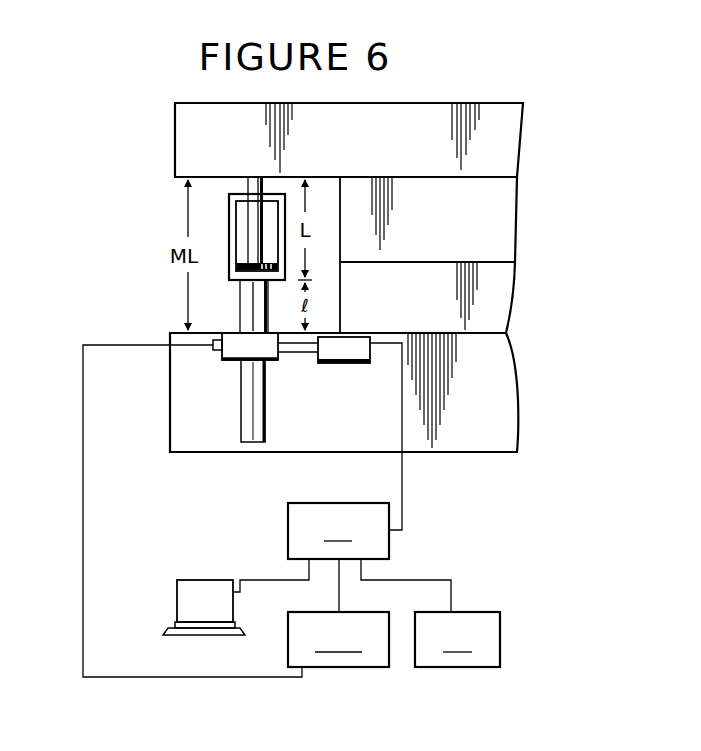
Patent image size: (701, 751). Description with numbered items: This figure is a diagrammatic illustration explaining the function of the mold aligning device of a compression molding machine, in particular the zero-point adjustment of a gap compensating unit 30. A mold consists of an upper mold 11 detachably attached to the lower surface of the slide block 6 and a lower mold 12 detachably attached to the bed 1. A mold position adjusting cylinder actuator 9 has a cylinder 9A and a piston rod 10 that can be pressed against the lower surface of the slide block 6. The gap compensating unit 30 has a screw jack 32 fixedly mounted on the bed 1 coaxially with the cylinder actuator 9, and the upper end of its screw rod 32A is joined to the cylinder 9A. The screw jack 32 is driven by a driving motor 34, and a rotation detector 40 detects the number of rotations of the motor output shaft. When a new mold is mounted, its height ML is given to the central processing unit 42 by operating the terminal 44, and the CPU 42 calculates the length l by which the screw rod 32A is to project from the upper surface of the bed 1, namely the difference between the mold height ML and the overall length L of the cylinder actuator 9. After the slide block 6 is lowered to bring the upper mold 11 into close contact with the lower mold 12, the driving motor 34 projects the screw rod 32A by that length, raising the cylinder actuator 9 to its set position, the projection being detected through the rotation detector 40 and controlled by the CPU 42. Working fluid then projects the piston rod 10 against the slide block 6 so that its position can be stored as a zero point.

The bed 1 is at (443, 440).
The slide block 6 is at (188, 133).
The mold position adjusting cylinder actuator 9 is at (226, 215).
The cylinder 9A is at (229, 270).
The piston rod 10 is at (249, 190).
The upper mold 11 is at (506, 200).
The lower mold 12 is at (498, 297).
The gap compensating unit 30 is at (231, 378).
The screw jack 32 is at (280, 366).
The screw rod 32A is at (240, 302).
The driving motor 34 is at (345, 365).
The rotation detector 40 is at (213, 350).
The central processing unit 42 is at (342, 585).
The terminal 44 is at (183, 603).